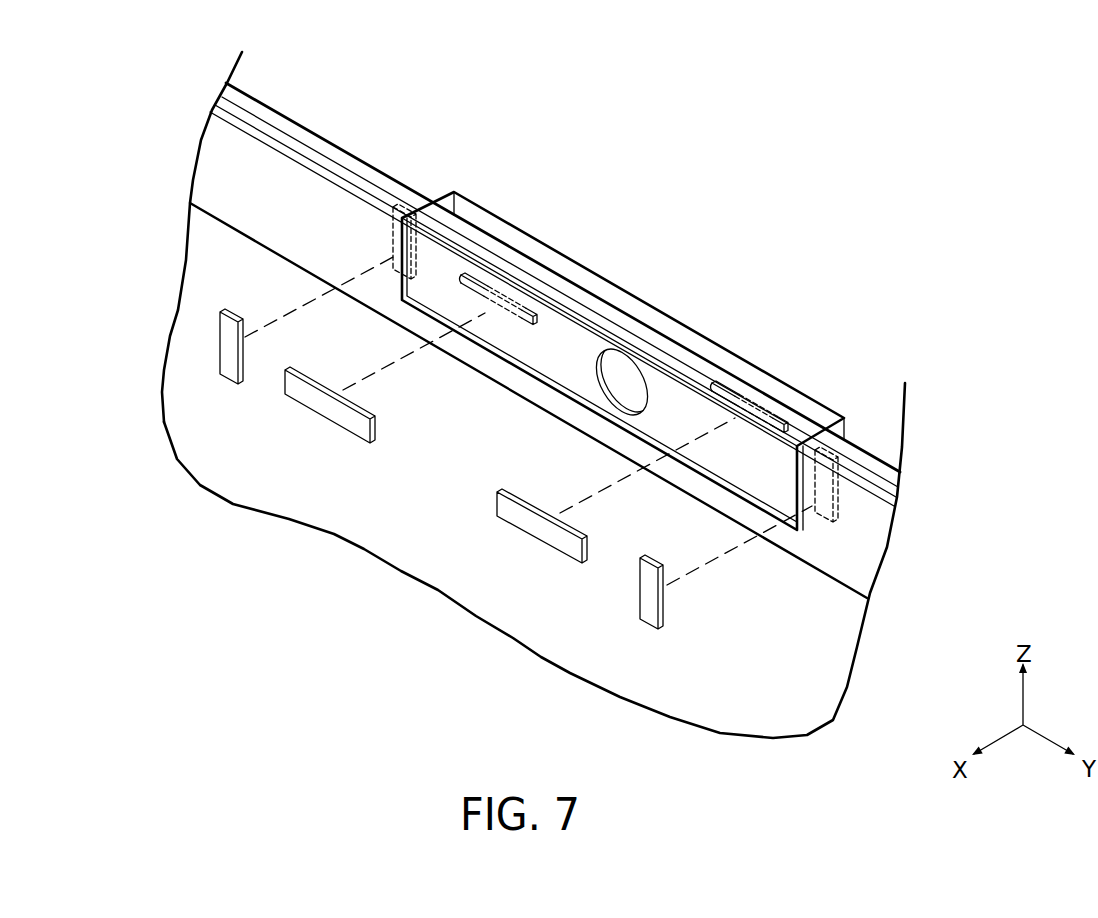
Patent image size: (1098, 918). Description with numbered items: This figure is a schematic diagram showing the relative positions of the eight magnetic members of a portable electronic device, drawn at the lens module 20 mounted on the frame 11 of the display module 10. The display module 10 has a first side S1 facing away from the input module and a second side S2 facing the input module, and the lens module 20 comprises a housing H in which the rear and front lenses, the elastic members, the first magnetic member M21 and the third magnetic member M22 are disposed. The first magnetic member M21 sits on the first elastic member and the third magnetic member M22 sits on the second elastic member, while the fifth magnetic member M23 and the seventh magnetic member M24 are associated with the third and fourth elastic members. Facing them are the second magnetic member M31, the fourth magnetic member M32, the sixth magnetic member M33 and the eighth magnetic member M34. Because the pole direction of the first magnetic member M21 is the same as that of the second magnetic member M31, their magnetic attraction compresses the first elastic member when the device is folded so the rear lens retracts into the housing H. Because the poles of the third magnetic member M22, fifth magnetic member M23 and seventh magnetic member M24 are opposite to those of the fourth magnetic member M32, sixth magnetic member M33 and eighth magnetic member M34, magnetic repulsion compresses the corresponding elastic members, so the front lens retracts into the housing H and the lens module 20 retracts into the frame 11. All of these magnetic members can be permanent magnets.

The first side S1 is at (342, 138).
The second side S2 is at (208, 237).
The display module 10 is at (884, 447).
The frame 11 is at (873, 537).
The lens module 20 is at (670, 266).
The housing H is at (588, 260).
The first magnetic member M21 is at (484, 284).
The third magnetic member M22 is at (738, 396).
The fifth magnetic member M23 is at (400, 205).
The seventh magnetic member M24 is at (821, 446).
The second magnetic member M31 is at (305, 398).
The fourth magnetic member M32 is at (520, 521).
The sixth magnetic member M33 is at (224, 378).
The eighth magnetic member M34 is at (647, 623).